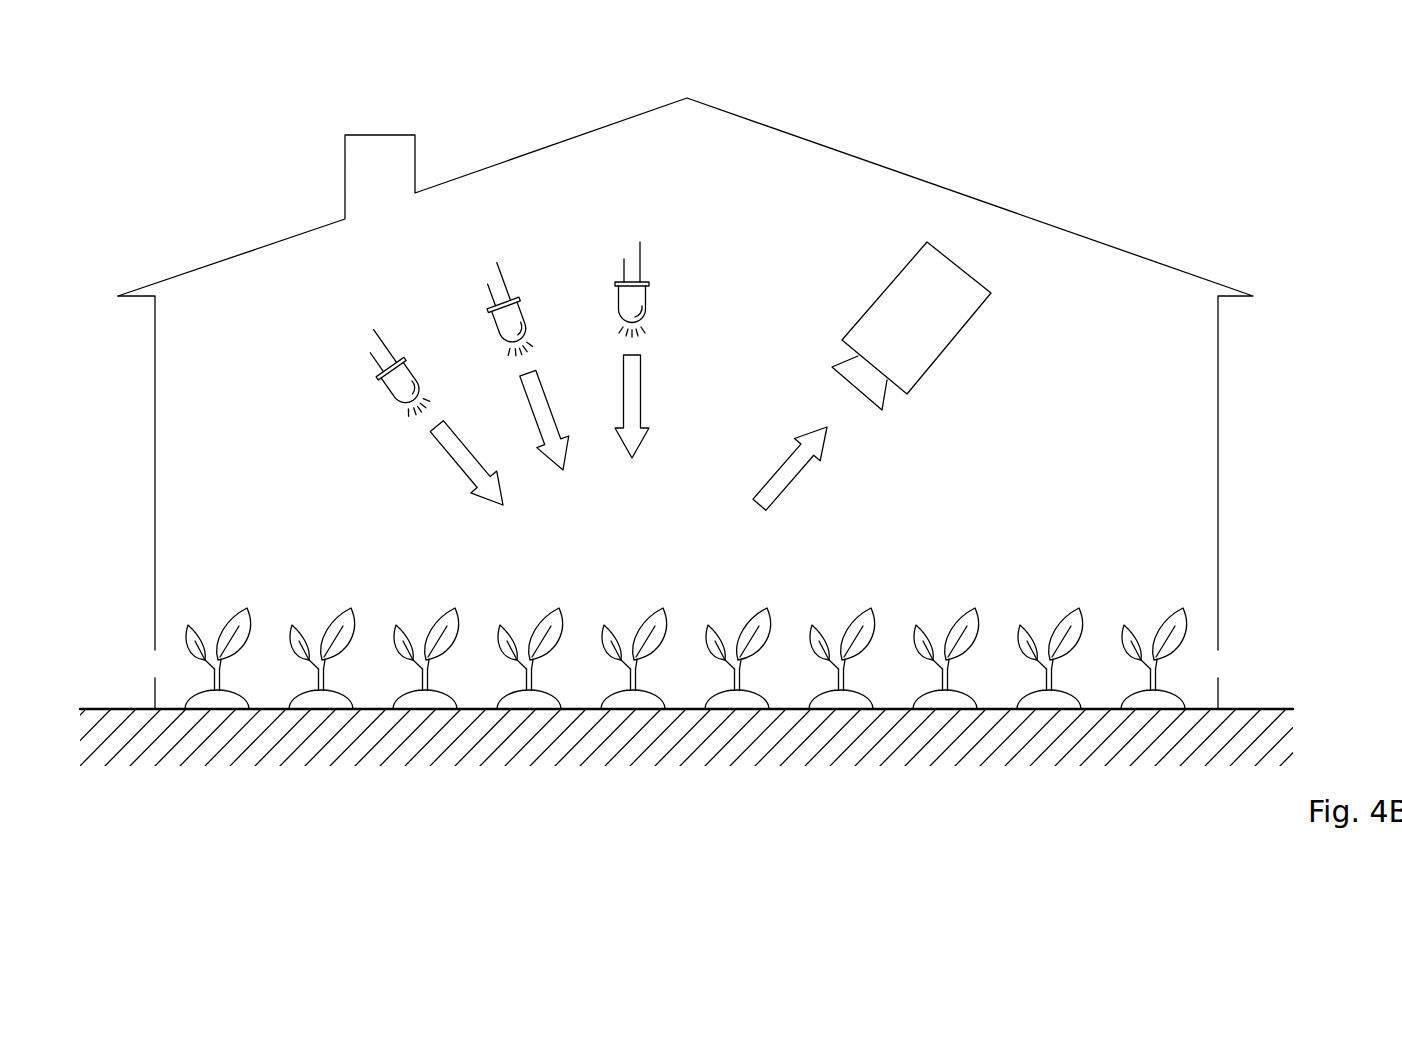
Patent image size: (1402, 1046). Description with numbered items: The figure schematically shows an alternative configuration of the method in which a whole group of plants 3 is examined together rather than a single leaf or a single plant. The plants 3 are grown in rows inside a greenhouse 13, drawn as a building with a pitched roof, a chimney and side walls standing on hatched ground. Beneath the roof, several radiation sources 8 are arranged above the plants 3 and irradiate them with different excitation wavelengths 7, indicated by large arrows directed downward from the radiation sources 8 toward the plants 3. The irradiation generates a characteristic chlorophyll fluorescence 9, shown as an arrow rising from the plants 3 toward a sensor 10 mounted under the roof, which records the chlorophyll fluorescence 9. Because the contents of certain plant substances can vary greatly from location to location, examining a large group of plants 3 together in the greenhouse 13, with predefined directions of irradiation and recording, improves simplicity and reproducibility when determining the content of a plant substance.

The plant 3 is at (160, 664).
The excitation wavelength 7 is at (424, 485).
The radiation source 8 is at (338, 395).
The chlorophyll fluorescence 9 is at (790, 468).
The sensor 10 is at (934, 333).
The greenhouse 13 is at (535, 150).